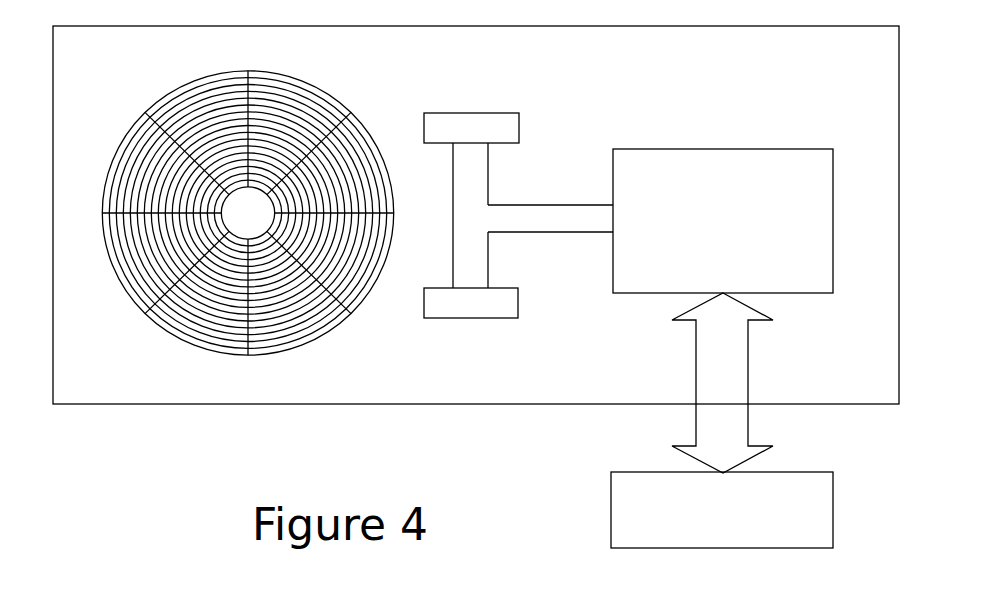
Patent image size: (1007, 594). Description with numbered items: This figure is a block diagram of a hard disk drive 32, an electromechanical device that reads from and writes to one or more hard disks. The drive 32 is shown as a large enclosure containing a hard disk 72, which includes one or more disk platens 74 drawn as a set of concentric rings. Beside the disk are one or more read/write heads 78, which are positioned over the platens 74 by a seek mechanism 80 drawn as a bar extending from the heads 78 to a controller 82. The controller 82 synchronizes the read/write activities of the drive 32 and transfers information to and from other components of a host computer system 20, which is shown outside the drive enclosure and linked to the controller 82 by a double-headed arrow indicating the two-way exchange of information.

The host computer system 20 is at (705, 491).
The hard disk drive 32 is at (444, 418).
The hard disk 72 is at (348, 332).
The disk platens 74 is at (252, 199).
The read/write heads 78 is at (492, 197).
The seek mechanism 80 is at (550, 201).
The controller 82 is at (723, 202).